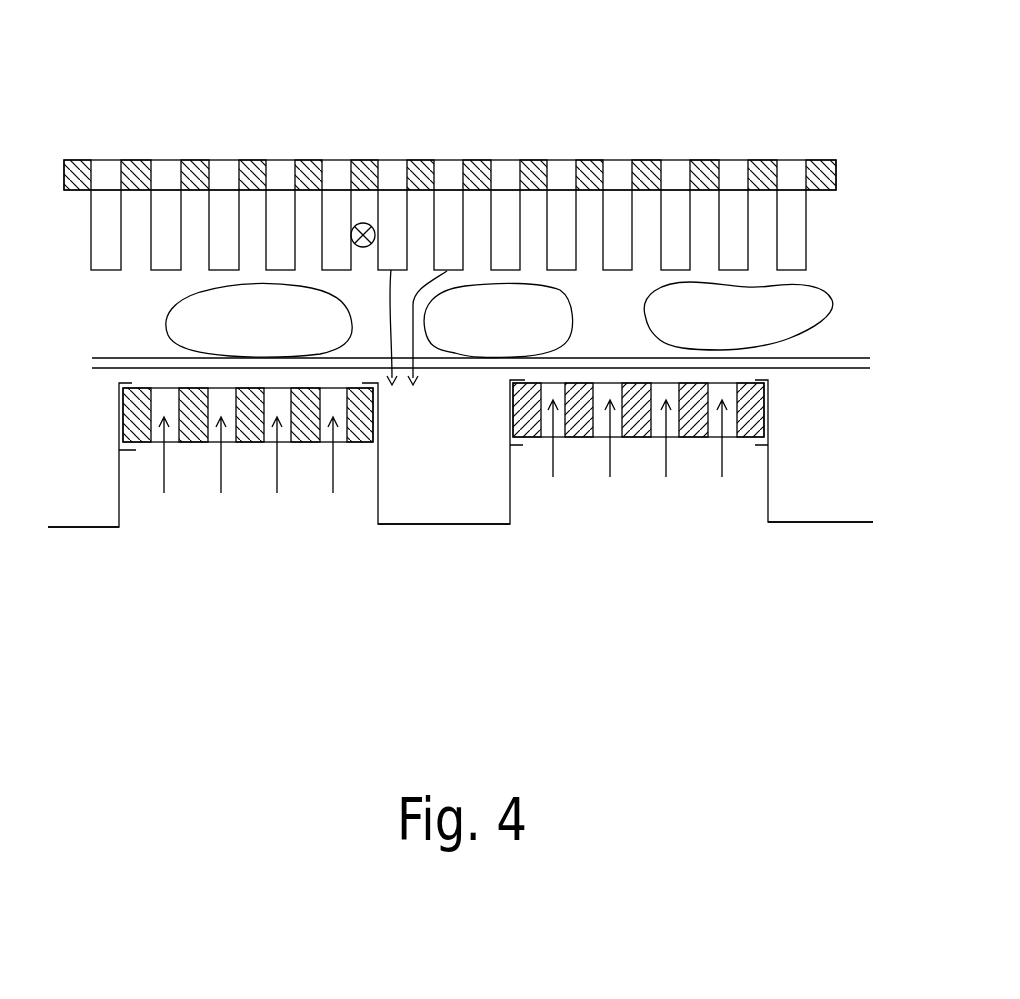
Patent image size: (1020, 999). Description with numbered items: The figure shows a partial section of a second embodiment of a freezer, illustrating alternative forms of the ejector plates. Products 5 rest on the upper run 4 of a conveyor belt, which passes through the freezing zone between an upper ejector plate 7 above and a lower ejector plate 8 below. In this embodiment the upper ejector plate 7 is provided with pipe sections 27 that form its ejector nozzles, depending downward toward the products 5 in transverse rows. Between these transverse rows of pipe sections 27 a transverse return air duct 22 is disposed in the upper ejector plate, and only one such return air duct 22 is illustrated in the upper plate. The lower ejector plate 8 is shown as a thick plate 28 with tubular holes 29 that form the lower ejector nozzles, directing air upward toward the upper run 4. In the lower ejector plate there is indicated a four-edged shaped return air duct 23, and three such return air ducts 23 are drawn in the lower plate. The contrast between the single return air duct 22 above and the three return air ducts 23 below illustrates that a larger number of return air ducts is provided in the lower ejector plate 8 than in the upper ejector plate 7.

The upper run 4 is at (820, 358).
The products 5 is at (793, 320).
The upper ejector plate 7 is at (763, 157).
The lower ejector plate 8 is at (774, 476).
The transverse return air duct 22 is at (363, 223).
The return air duct 23 is at (73, 508).
The pipe sections 27 is at (333, 222).
The thick plate 28 is at (693, 427).
The tubular holes 29 is at (713, 427).